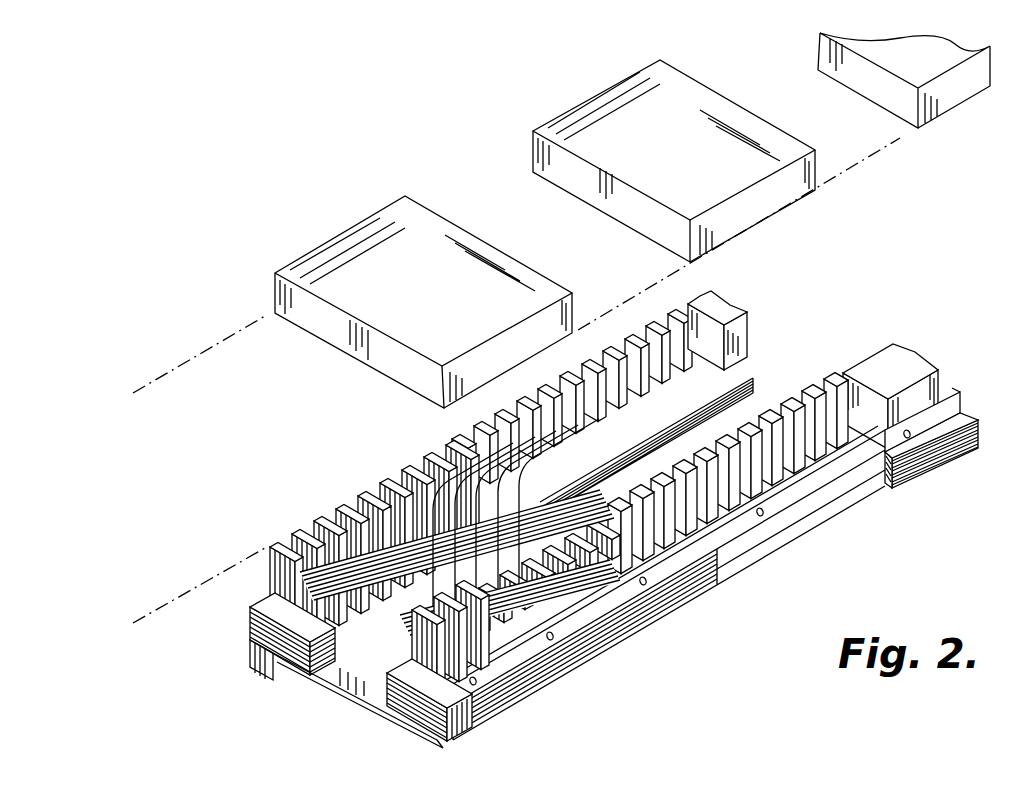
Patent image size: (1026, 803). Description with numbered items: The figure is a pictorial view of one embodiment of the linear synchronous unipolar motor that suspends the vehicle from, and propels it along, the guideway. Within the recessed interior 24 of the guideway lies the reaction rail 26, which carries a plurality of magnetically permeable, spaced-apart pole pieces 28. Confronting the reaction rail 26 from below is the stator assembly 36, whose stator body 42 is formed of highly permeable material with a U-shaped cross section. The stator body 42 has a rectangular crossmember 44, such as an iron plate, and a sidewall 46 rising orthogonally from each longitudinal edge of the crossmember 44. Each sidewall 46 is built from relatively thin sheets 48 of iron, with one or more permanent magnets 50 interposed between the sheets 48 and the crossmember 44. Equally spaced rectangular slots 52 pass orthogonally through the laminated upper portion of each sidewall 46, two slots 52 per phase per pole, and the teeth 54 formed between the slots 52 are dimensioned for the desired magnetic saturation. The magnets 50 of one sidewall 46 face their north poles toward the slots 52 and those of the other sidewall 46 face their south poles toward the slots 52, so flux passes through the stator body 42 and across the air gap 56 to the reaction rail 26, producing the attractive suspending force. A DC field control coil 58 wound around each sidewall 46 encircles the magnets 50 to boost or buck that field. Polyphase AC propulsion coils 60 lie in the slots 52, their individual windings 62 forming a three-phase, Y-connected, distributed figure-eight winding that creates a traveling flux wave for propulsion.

The recessed interior 24 is at (380, 672).
The reaction rail 26 is at (522, 152).
The pole pieces 28 is at (333, 247).
The stator assembly 36 is at (756, 353).
The stator body 42 is at (907, 340).
The rectangular crossmember 44 is at (315, 685).
The sidewall 46 is at (738, 304).
The thin sheets 48 is at (262, 633).
The permanent magnets 50 is at (822, 503).
The rectangular slots 52 is at (712, 574).
The teeth 54 is at (408, 472).
The air gap 56 is at (120, 400).
The DC field control coil 58 is at (285, 668).
The polyphase AC propulsion coils 60 is at (587, 615).
The windings 62 is at (524, 630).